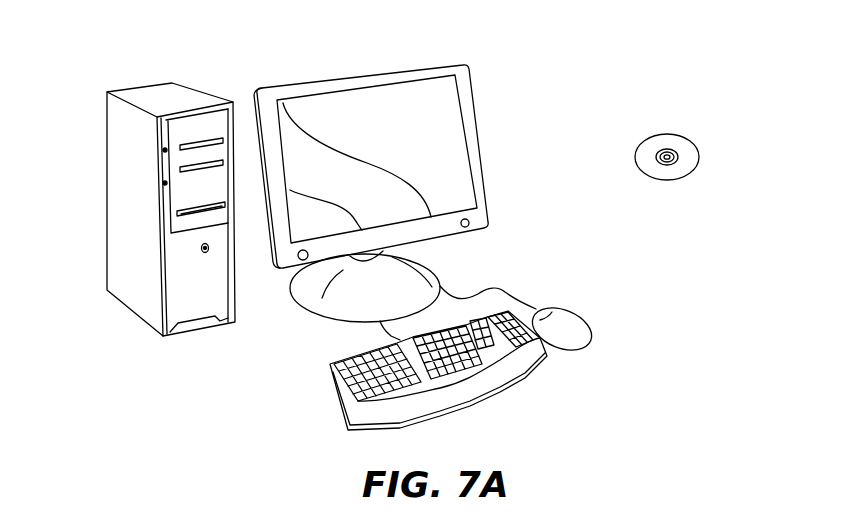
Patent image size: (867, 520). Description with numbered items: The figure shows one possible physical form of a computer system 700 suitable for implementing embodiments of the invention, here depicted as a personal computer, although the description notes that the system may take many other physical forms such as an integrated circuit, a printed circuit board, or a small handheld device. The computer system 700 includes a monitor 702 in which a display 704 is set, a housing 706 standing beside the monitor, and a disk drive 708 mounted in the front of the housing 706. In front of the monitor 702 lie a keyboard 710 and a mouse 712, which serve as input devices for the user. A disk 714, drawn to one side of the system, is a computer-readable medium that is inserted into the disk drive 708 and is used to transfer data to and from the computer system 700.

The computer system 700 is at (598, 46).
The monitor 702 is at (480, 165).
The display 704 is at (437, 103).
The housing 706 is at (157, 93).
The disk drive 708 is at (222, 208).
The keyboard 710 is at (338, 400).
The mouse 712 is at (580, 320).
The disk 714 is at (680, 135).